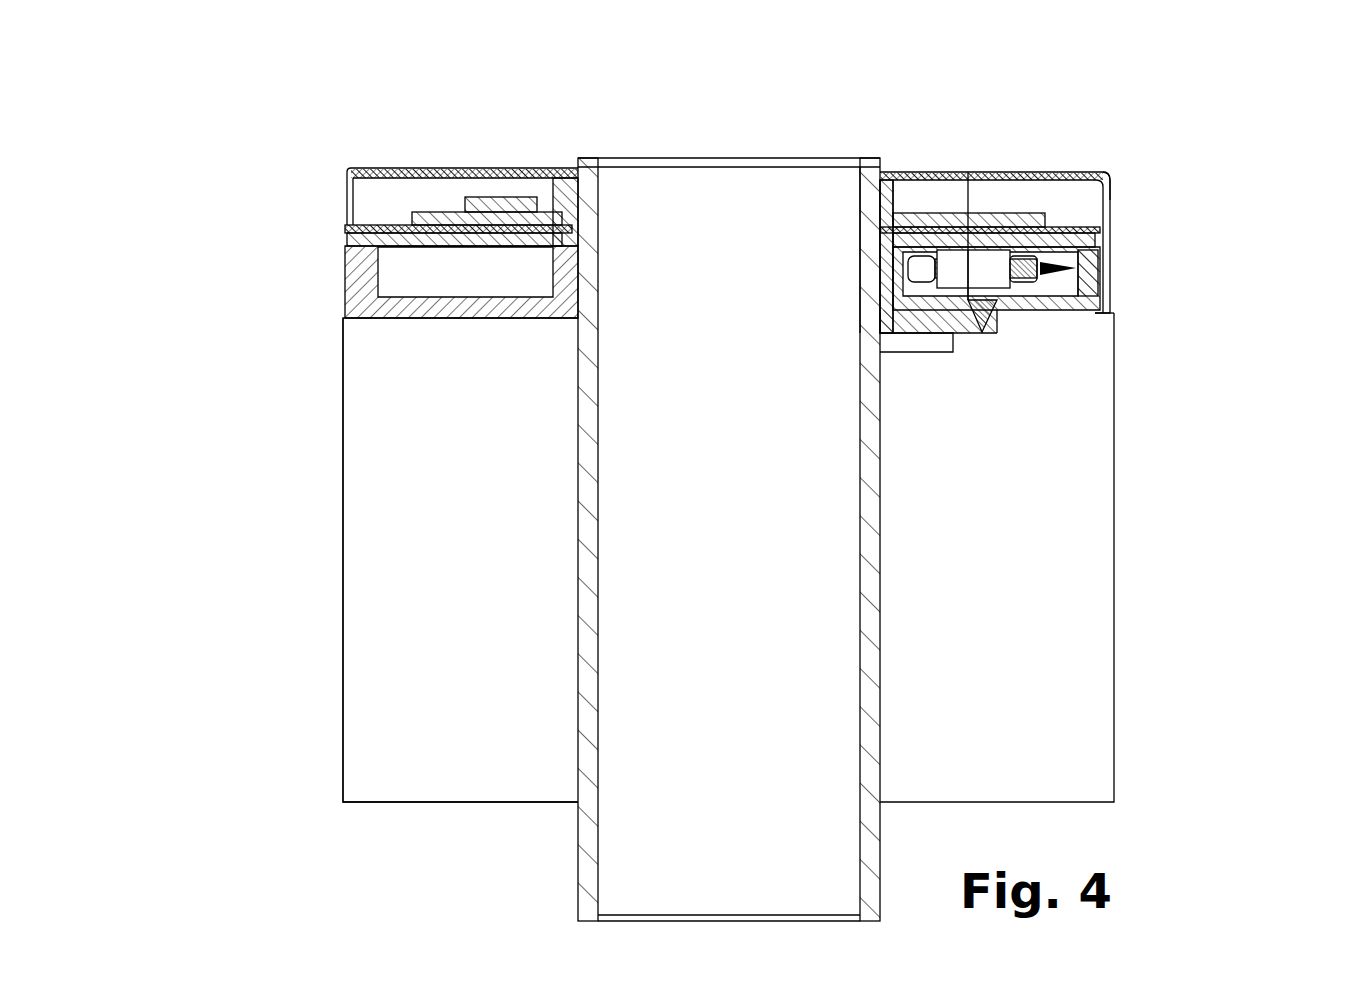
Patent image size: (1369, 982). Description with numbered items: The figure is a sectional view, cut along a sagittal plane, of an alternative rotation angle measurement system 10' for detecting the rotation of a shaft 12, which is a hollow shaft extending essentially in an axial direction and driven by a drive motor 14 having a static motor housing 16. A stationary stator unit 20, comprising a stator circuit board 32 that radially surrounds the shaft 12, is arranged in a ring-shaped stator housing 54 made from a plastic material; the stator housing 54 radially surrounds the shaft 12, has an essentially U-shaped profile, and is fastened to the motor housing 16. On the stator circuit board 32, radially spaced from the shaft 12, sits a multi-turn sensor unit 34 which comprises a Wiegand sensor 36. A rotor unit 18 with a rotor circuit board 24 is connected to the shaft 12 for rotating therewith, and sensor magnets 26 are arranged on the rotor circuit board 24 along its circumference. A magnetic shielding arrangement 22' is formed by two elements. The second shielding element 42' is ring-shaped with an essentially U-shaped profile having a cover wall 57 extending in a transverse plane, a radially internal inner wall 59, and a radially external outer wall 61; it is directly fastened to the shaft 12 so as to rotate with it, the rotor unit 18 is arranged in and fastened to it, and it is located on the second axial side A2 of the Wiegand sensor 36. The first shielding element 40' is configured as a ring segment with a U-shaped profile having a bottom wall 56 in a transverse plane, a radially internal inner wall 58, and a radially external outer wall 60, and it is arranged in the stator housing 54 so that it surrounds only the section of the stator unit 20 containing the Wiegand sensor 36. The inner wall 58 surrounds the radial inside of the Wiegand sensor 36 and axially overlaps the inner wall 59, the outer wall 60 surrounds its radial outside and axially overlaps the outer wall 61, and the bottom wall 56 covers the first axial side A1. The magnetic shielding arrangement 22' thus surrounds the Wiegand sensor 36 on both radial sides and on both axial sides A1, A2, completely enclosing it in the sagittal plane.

The rotation angle measurement system 10' is at (1096, 427).
The shaft 12 is at (585, 158).
The drive motor 14 is at (270, 597).
The motor housing 16 is at (343, 490).
The rotor unit 18 is at (387, 168).
The stator unit 20 is at (347, 293).
The magnetic shielding arrangement 22' is at (1085, 212).
The rotor circuit board 24 is at (420, 200).
The sensor magnets 26 is at (498, 168).
The stator circuit board 32 is at (343, 240).
The multi-turn sensor unit 34 is at (1062, 320).
The Wiegand sensor 36 is at (1112, 272).
The first shielding element 40' is at (1212, 334).
The second shielding element 42' is at (975, 134).
The stator housing 54 is at (345, 303).
The bottom wall 56 is at (1005, 317).
The cover wall 57 is at (943, 172).
The inner wall 58 is at (877, 260).
The inner wall 59 is at (857, 237).
The outer wall 60 is at (1112, 265).
The outer wall 61 is at (1120, 193).
The first axial side A1 is at (973, 312).
The second axial side A2 is at (968, 172).